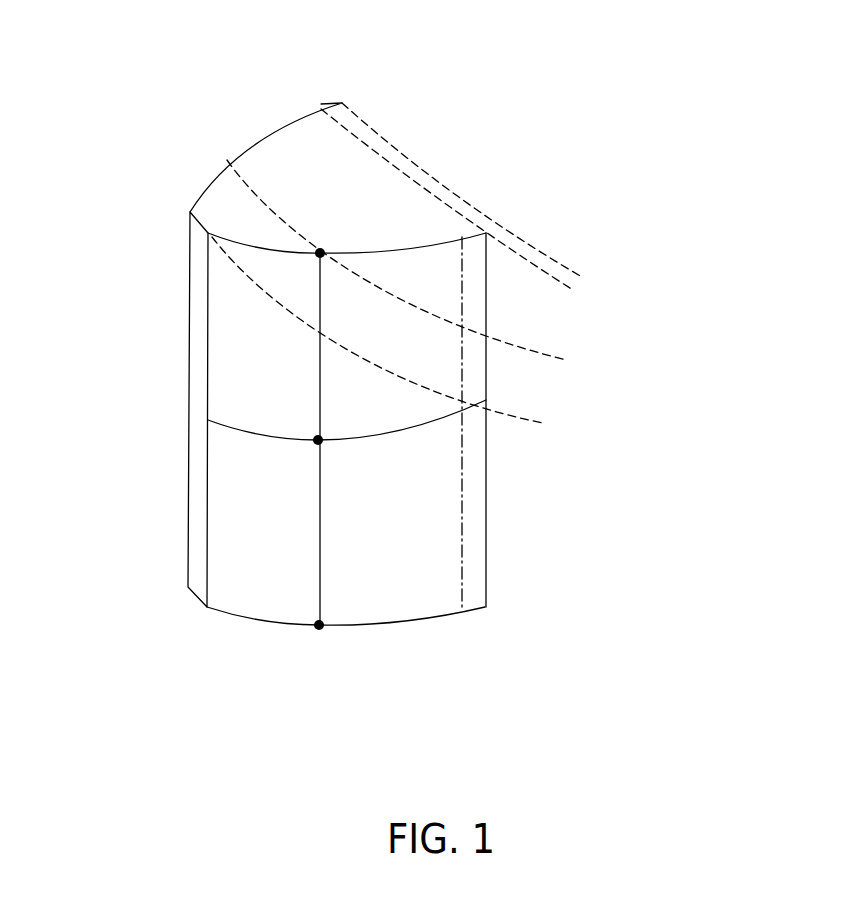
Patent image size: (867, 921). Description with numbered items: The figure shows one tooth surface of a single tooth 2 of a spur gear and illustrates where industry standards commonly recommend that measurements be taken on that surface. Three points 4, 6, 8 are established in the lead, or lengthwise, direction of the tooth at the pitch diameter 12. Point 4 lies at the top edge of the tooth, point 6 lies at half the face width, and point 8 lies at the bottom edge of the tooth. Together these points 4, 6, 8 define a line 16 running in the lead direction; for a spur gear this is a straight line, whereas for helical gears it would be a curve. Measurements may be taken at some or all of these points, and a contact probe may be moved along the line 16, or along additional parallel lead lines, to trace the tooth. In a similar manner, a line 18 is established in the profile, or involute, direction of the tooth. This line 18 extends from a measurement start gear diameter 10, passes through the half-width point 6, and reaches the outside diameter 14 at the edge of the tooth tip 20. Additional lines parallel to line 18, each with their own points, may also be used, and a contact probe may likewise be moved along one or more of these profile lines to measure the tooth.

The tooth 2 is at (347, 372).
The point 4 is at (322, 253).
The point 6 is at (320, 440).
The point 8 is at (320, 626).
The measurement start gear diameter 10 is at (355, 145).
The pitch diameter 12 is at (275, 207).
The outside diameter 14 is at (242, 265).
The line 16 is at (322, 493).
The line 18 is at (270, 443).
The tooth tip 20 is at (203, 308).